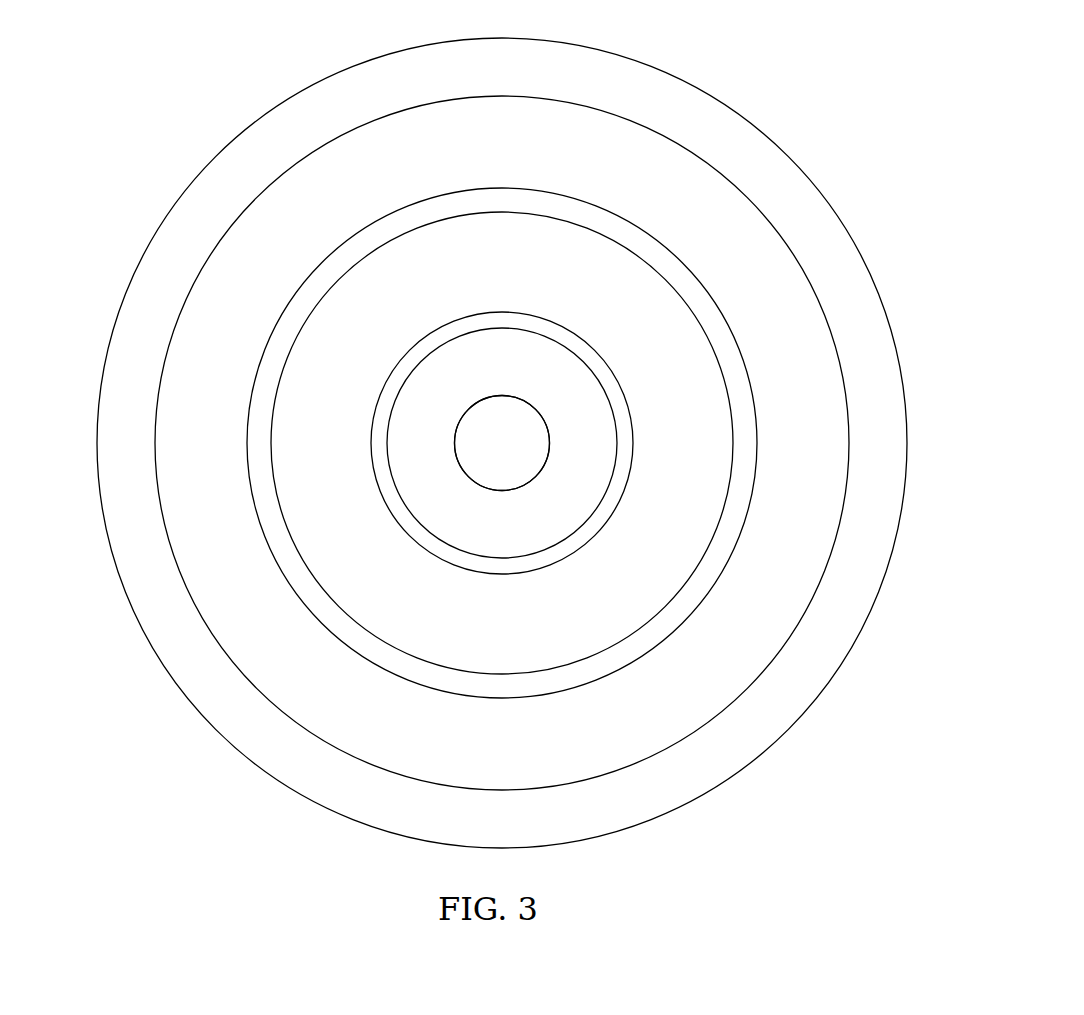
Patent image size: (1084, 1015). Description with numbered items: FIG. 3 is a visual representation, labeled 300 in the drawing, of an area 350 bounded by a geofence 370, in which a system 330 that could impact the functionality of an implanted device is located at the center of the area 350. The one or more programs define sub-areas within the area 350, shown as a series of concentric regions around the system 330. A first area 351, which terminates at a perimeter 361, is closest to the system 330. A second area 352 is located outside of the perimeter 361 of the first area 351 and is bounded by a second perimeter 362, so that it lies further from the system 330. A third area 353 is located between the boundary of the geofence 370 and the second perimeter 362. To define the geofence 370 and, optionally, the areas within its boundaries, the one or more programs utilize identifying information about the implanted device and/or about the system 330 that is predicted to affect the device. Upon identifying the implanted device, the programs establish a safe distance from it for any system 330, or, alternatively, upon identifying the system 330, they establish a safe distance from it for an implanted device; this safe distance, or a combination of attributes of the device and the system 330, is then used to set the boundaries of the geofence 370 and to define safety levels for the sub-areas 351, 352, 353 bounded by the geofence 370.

The bearing assembly 300 is at (460, 443).
The system 330 is at (526, 455).
The area 350 is at (97, 443).
The first area 351 is at (472, 393).
The second area 352 is at (397, 316).
The third area 353 is at (350, 203).
The perimeter 361 is at (501, 328).
The second perimeter 362 is at (501, 212).
The geofence 370 is at (182, 600).